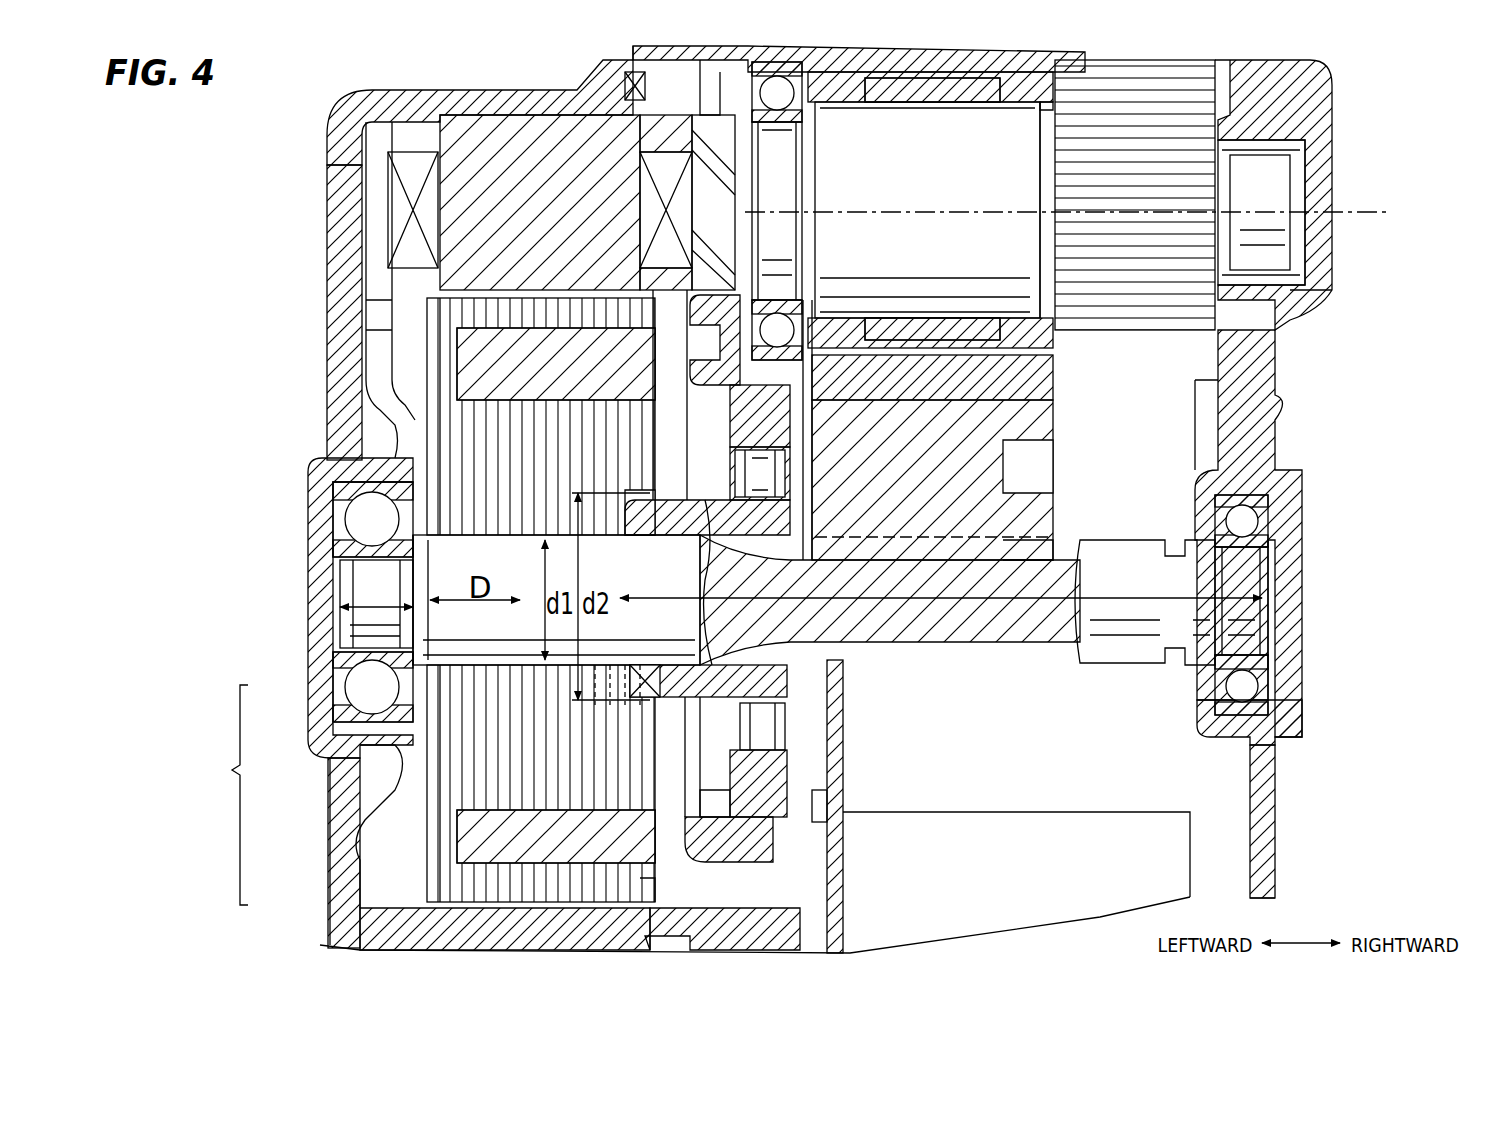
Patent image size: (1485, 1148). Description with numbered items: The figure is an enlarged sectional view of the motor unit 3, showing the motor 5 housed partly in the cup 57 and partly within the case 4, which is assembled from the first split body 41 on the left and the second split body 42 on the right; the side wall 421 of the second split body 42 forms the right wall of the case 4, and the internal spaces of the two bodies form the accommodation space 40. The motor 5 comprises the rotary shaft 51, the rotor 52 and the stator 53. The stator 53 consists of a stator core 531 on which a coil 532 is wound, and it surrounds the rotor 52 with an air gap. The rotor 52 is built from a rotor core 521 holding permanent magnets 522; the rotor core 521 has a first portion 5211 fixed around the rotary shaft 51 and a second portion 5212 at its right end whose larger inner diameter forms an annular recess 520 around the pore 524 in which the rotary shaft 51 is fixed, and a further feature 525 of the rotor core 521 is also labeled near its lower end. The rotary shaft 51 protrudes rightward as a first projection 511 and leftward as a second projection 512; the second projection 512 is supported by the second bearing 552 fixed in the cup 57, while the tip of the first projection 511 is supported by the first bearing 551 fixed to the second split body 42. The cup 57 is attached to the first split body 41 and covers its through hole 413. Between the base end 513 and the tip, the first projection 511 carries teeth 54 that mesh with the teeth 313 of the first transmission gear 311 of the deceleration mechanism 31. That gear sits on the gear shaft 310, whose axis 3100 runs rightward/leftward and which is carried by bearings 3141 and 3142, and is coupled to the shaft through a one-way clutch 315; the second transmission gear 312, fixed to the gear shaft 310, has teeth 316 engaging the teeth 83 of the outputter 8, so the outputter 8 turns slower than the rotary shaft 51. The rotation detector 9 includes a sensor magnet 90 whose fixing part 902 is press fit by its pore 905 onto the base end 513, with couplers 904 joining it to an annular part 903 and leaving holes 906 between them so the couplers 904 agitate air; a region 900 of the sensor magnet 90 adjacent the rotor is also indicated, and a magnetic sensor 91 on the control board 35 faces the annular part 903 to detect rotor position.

The motor unit 3 is at (1335, 485).
The case 4 is at (1270, 423).
The motor 5 is at (229, 795).
The outputter 8 is at (1203, 68).
The rotation detector 9 is at (776, 741).
The deceleration mechanism 31 is at (1124, 210).
The control board 35 is at (842, 880).
The accommodation space 40 is at (1205, 800).
The first split body 41 is at (752, 842).
The second split body 42 is at (1290, 722).
The rotary shaft 51 is at (486, 632).
The rotor 52 is at (484, 582).
The stator 53 is at (460, 930).
The teeth 54 is at (777, 624).
The cup 57 is at (335, 905).
The teeth 83 is at (1240, 95).
The sensor magnet 90 is at (780, 690).
The magnetic sensor 91 is at (820, 815).
The gear shaft 310 is at (1283, 185).
The first transmission gear 311 is at (1020, 443).
The second transmission gear 312 is at (1125, 325).
The teeth 313 is at (1042, 545).
The one-way clutch 315 is at (935, 90).
The teeth 316 is at (1052, 105).
The through hole 413 is at (700, 802).
The side wall 421 is at (1263, 888).
The first projection 511 is at (1115, 595).
The second projection 512 is at (378, 606).
The base end 513 is at (690, 565).
The recess 520 is at (625, 490).
The rotor core 521 is at (445, 340).
The permanent magnets 522 is at (518, 360).
The pore 524 is at (470, 548).
The core end 525 is at (656, 878).
The stator core 531 is at (482, 130).
The coil 532 is at (395, 190).
The first bearing 551 is at (1215, 682).
The second bearing 552 is at (350, 525).
The bracket hole 900 is at (617, 708).
The fixing part 902 is at (650, 688).
The annular part 903 is at (780, 393).
The couplers 904 is at (772, 742).
The pore 905 is at (652, 525).
The holes 906 is at (768, 475).
The axis 3100 is at (1380, 214).
The bearing 3141 is at (1313, 290).
The bearing 3142 is at (773, 90).
The first portion 5211 is at (478, 462).
The second portion 5212 is at (640, 418).